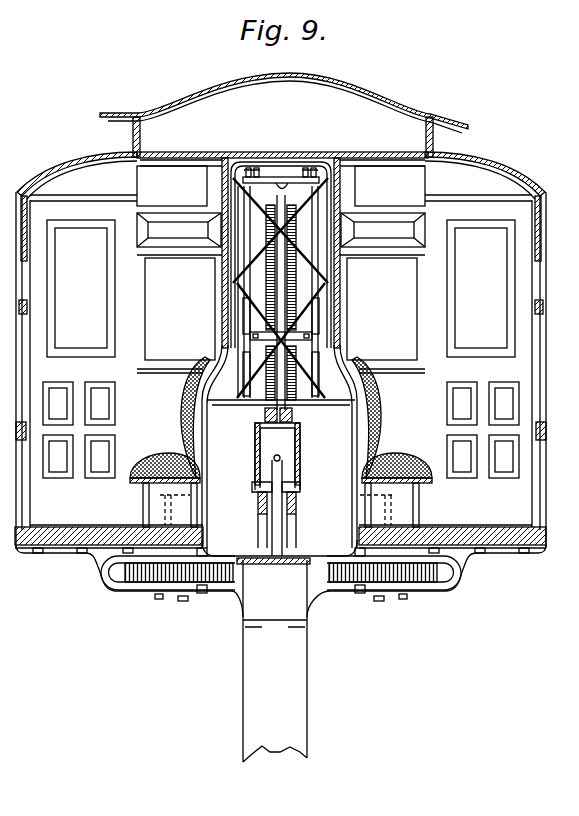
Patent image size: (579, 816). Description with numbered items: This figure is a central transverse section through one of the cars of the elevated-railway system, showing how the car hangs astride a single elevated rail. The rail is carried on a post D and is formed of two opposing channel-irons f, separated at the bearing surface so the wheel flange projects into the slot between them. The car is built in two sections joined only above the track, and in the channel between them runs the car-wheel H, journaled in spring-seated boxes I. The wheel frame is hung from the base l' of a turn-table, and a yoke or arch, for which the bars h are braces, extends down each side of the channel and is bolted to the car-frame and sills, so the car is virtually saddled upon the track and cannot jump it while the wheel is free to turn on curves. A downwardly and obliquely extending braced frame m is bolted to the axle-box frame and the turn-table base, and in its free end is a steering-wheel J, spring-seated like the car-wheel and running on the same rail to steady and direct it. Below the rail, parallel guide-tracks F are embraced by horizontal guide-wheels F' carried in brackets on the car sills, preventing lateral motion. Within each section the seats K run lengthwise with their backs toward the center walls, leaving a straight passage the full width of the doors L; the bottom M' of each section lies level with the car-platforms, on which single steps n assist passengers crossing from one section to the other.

The base of turn-table l' is at (281, 242).
The bars h is at (330, 188).
The car-wheel H is at (285, 266).
The braced frame m is at (232, 283).
The journal-boxes I is at (230, 315).
The seat back K' is at (279, 406).
The doors L is at (281, 349).
The seats K is at (281, 482).
The steering-wheel J is at (293, 418).
The cylinder E' is at (276, 457).
The channel-irons f is at (257, 462).
The single steps n is at (277, 510).
The bottom of car section M' is at (280, 525).
The guide-tracks F is at (273, 552).
The guide-wheels F' is at (281, 589).
The posts D is at (298, 668).